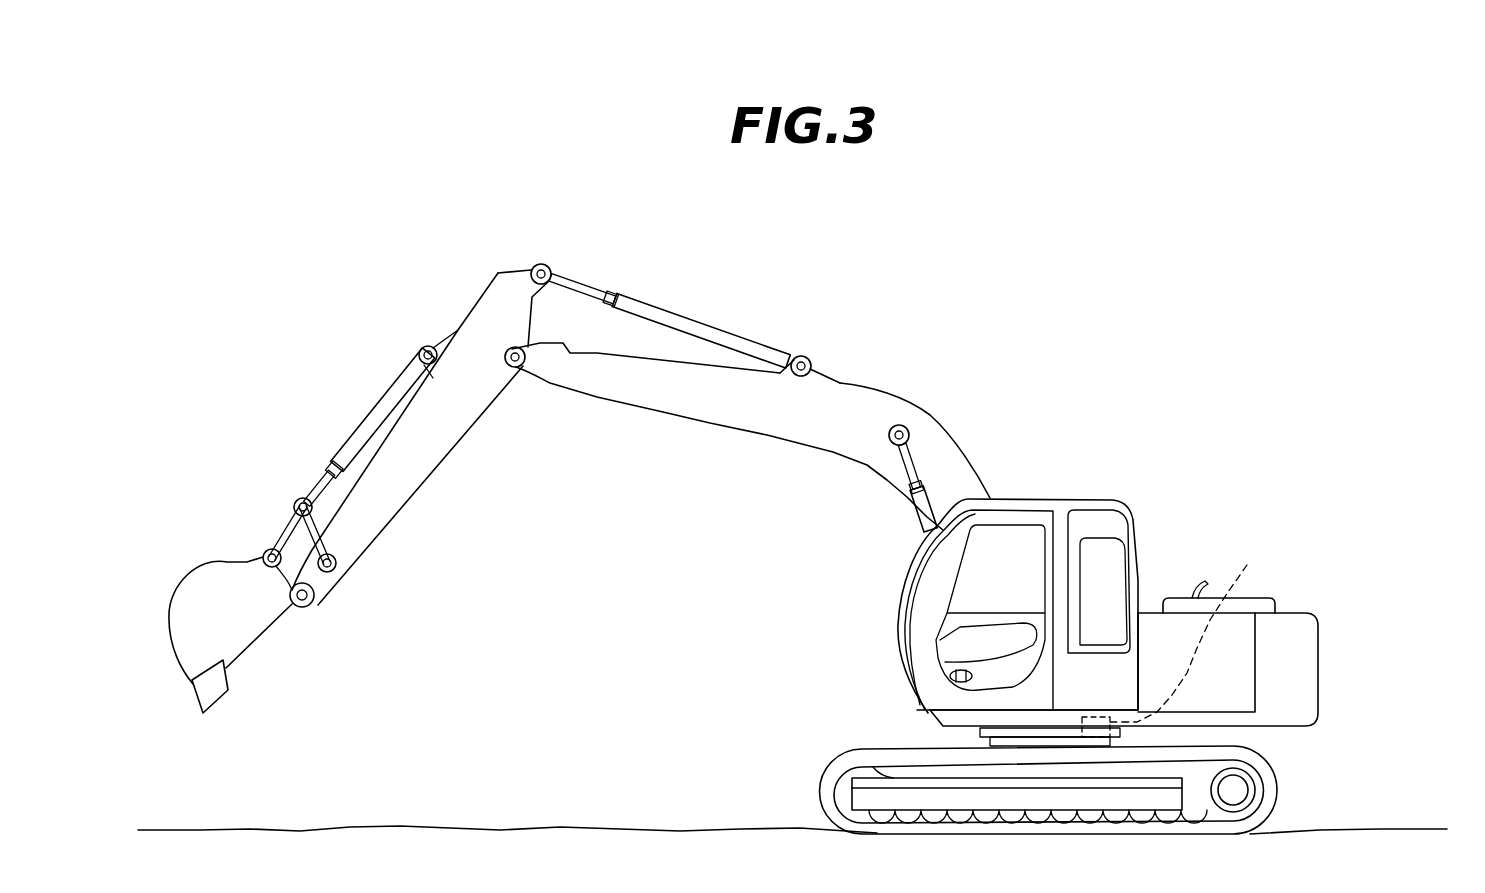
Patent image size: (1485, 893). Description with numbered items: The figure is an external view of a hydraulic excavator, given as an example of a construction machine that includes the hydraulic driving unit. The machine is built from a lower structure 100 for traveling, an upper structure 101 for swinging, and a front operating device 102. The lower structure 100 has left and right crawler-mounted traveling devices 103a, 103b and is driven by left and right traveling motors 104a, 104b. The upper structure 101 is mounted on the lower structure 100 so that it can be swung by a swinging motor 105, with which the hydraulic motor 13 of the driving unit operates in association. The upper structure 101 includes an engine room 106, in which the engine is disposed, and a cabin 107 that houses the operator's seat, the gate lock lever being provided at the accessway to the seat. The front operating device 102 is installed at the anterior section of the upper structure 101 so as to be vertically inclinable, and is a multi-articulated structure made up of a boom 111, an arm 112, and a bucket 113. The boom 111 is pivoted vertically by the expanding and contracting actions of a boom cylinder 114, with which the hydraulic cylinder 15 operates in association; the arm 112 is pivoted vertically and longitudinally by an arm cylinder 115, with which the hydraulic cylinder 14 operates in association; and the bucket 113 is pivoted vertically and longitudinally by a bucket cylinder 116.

The lower structure 100 is at (1043, 810).
The upper structure 101 is at (1171, 639).
The front operating device 102 is at (584, 481).
The crawler-mounted traveling device 103a is at (945, 782).
The crawler-mounted traveling device 103b is at (827, 768).
The traveling motor 104a is at (1342, 789).
The traveling motor 104b is at (1240, 788).
The swinging motor 105 is at (1228, 639).
The hydraulic motor 13 is at (1358, 642).
The engine room 106 is at (1232, 675).
The cabin 107 is at (1040, 500).
The boom 111 is at (668, 397).
The arm 112 is at (407, 473).
The bucket 113 is at (257, 647).
The boom cylinder 114 is at (842, 485).
The hydraulic cylinder 15 is at (915, 518).
The arm cylinder 115 is at (671, 312).
The hydraulic cylinder 14 is at (700, 320).
The bucket cylinder 116 is at (367, 415).